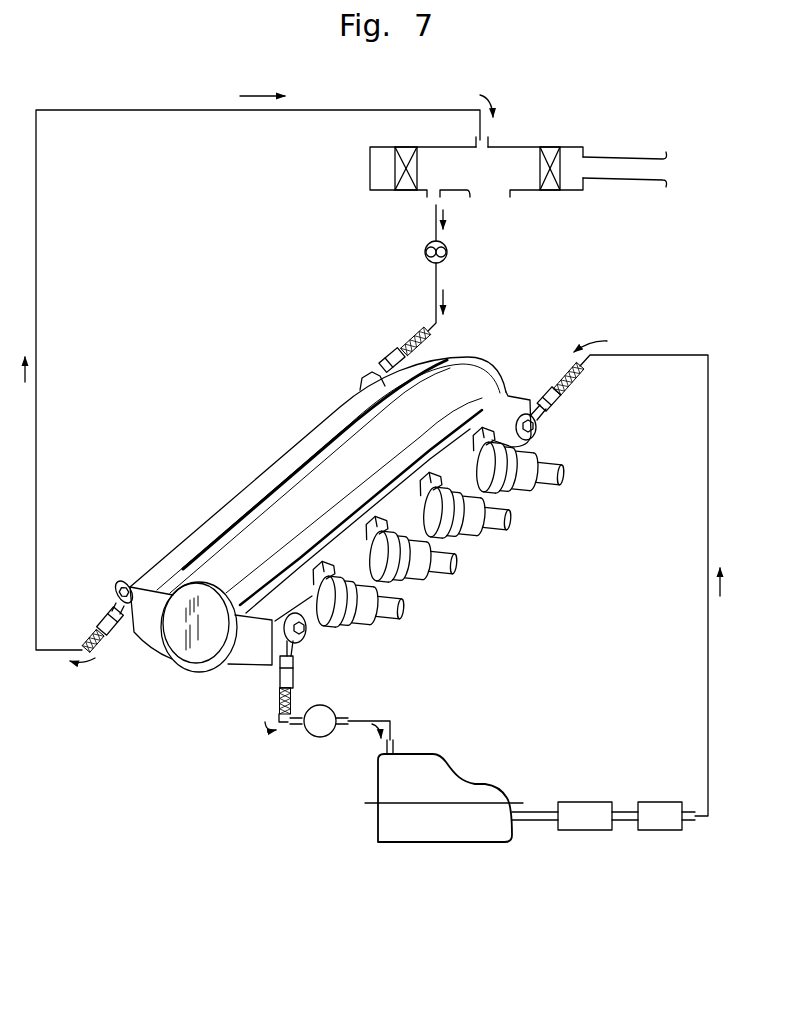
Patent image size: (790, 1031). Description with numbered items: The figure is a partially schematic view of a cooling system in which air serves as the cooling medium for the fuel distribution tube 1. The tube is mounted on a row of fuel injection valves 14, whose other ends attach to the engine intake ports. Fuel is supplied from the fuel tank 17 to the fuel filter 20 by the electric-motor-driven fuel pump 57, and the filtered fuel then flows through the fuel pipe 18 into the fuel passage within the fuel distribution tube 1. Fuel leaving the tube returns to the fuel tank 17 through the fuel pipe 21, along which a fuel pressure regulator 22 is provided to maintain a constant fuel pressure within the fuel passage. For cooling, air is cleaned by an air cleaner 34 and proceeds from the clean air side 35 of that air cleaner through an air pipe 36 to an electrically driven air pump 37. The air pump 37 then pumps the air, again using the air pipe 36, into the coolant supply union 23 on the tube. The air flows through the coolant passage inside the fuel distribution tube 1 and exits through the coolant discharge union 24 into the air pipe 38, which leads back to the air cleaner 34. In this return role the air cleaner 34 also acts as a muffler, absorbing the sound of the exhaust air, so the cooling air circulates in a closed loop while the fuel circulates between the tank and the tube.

The fuel distribution tube 1 is at (479, 360).
The fuel injection valves 14 is at (549, 489).
The fuel tank 17 is at (453, 829).
The fuel pipe 18 is at (710, 641).
The fuel filter 20 is at (664, 822).
The fuel pipe 21 is at (384, 717).
The fuel pressure regulator 22 is at (321, 725).
The coolant supply union 23 is at (382, 368).
The coolant discharge union 24 is at (118, 609).
The air cleaner 34 is at (527, 146).
The clean air side 35 is at (489, 174).
The air pipe 36 is at (437, 283).
The air pump 37 is at (447, 249).
The air pipe 38 is at (37, 332).
The fuel pump 57 is at (588, 822).